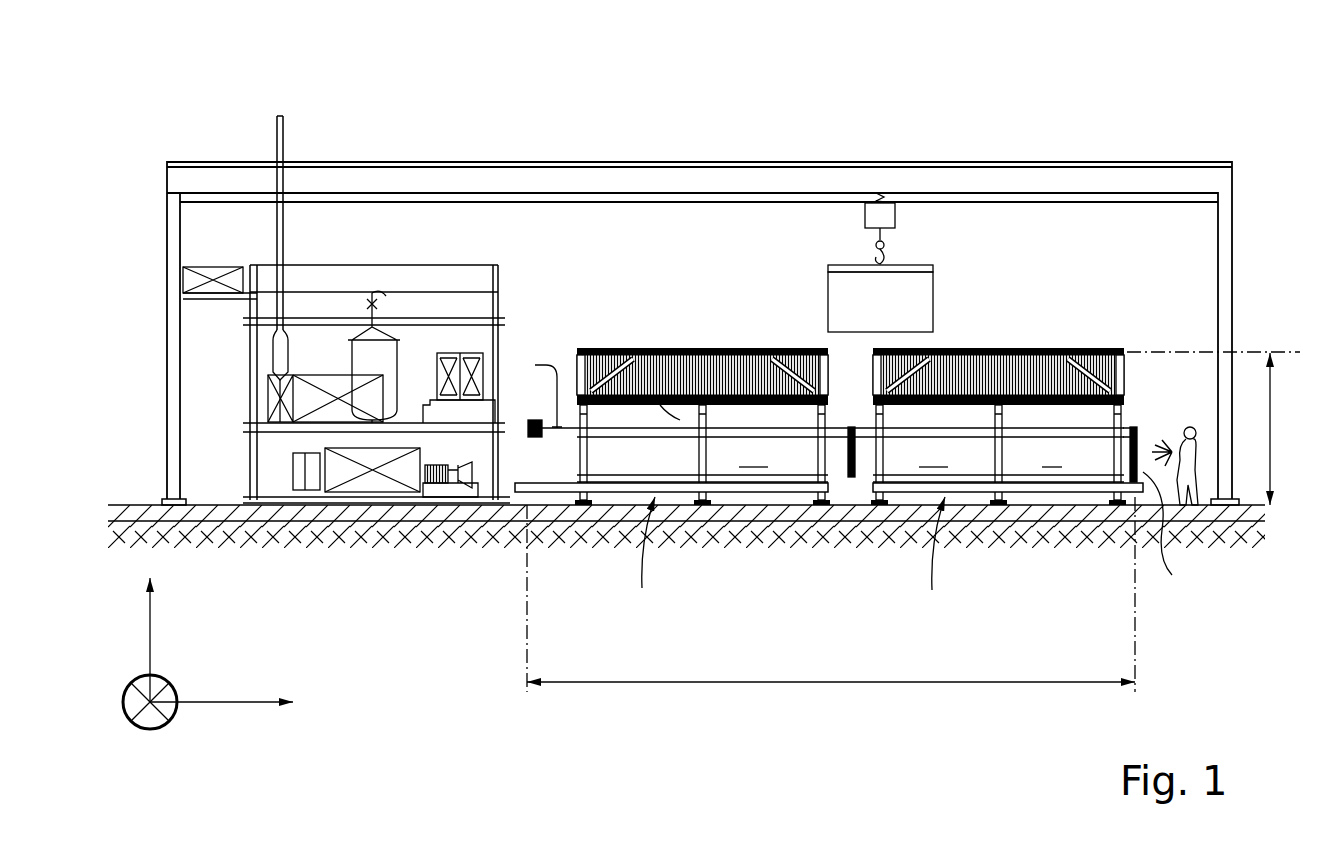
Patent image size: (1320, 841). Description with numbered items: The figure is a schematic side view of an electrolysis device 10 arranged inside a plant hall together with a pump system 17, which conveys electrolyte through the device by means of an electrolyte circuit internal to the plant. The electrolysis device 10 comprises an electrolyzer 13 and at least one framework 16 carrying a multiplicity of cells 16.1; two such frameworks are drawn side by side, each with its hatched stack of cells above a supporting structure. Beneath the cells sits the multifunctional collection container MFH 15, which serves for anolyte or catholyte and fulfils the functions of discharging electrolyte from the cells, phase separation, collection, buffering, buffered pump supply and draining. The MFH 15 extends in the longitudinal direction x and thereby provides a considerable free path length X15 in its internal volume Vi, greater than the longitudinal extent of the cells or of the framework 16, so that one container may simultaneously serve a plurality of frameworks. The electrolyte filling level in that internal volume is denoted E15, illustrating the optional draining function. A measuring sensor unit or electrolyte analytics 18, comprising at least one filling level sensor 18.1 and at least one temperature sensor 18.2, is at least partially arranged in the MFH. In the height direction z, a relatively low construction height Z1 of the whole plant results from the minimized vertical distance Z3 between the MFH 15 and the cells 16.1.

The electrolysis device 10 is at (668, 150).
The pump system 17 is at (197, 147).
The framework 16 is at (742, 322).
The cell 16.1 is at (600, 348).
The electrolyzer 13 is at (1130, 330).
The multifunctional collection container MFH 15 is at (1145, 410).
The measuring sensor unit or electrolyte analytics 18 is at (535, 423).
The filling level sensor 18.1 is at (548, 396).
The temperature sensor 18.2 is at (535, 428).
The construction height Z1 is at (1220, 428).
The vertical distance Z3 is at (680, 350).
The free path length X15 is at (831, 609).
The electrolyte filling level E15 is at (1185, 534).